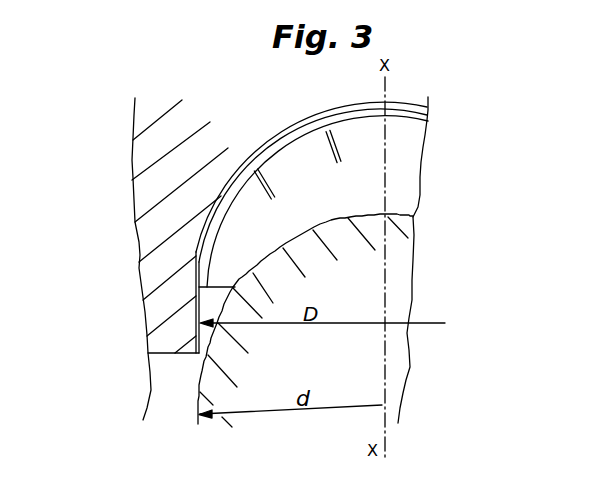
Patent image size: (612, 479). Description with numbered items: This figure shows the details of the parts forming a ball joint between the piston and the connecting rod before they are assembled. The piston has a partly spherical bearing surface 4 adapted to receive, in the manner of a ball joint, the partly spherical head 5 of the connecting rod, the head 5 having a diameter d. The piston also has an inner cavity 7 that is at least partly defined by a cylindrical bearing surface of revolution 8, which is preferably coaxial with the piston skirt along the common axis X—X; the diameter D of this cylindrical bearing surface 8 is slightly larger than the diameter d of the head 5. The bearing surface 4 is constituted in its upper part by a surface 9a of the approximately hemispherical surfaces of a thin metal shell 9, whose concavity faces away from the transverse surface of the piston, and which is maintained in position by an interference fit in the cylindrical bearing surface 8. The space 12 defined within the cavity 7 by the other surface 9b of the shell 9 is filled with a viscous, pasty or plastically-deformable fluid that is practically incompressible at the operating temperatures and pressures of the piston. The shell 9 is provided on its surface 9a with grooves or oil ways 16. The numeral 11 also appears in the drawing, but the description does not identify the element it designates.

The cylinder head / upper block portion 4 is at (396, 104).
The cylinder block 5 is at (327, 320).
The annular space 7 is at (254, 255).
The shoulder of liner 8 is at (144, 287).
The cylinder liner 9 is at (312, 178).
The inner surface of liner 9a is at (317, 201).
The outer surface of liner 9b is at (311, 161).
The flange of liner 11 is at (196, 312).
The coating layer 12 is at (322, 118).
The pins 16 is at (334, 162).